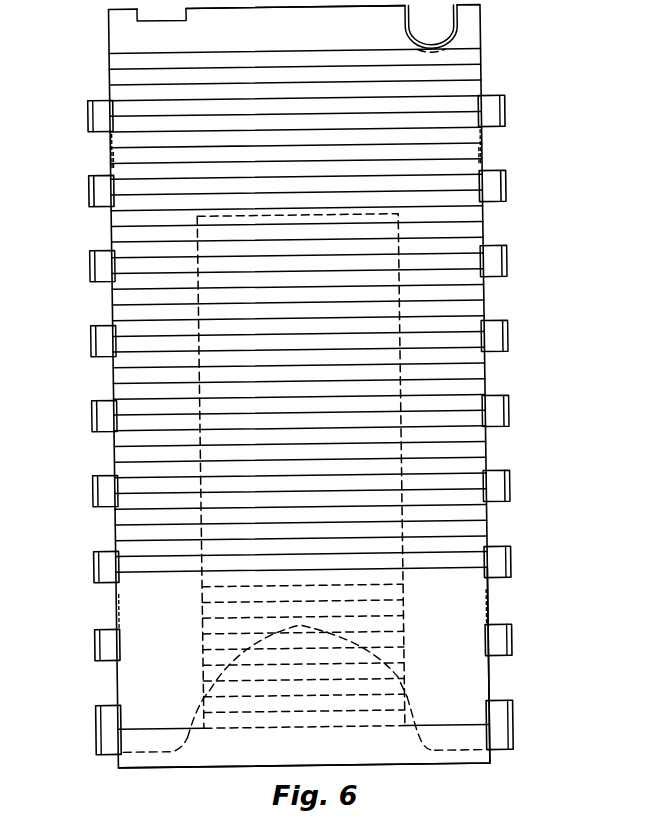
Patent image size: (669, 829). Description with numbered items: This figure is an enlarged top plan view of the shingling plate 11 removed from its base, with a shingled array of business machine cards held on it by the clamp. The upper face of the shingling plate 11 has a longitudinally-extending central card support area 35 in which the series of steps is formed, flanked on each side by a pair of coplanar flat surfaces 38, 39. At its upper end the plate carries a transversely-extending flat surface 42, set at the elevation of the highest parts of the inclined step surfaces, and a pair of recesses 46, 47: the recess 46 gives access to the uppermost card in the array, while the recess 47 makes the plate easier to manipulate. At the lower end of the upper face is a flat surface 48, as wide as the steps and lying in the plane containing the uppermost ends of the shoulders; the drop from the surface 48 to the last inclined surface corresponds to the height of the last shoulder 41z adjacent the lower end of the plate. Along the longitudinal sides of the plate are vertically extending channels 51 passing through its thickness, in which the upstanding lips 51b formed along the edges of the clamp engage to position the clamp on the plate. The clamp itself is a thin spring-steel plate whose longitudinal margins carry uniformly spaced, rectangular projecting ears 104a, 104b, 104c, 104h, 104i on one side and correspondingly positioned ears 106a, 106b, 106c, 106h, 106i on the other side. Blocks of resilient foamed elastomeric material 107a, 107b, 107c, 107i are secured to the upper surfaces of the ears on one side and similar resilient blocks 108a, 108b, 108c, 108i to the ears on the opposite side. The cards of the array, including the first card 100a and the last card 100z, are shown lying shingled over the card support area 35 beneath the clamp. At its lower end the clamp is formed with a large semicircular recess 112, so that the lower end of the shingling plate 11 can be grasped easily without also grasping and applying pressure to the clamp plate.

The shingling plate 11 is at (109, 48).
The card support area 35 is at (392, 247).
The flat surface 38 is at (463, 758).
The flat surface 39 is at (155, 758).
The last shoulder 41z is at (380, 727).
The transversely-extending flat surface 42 is at (329, 39).
The recess 46 is at (440, 28).
The recess 47 is at (157, 17).
The flat surface 48 is at (365, 757).
The vertically extending channel 51 is at (110, 140).
The upstanding lip 51b is at (110, 158).
The top layer 100a is at (472, 58).
The bottom layer 100z is at (477, 678).
The projecting ear 104i is at (508, 110).
The projecting ear 104h is at (508, 185).
The projecting ear 104c is at (513, 553).
The projecting ear 104b is at (515, 637).
The projecting ear 104a is at (515, 728).
The projecting ear 106i is at (92, 120).
The projecting ear 106h is at (92, 193).
The projecting ear 106c is at (97, 564).
The projecting ear 106b is at (95, 640).
The projecting ear 106a is at (97, 735).
The resilient block 107i is at (487, 102).
The resilient block 107c is at (490, 553).
The resilient block 107b is at (495, 632).
The resilient block 107a is at (495, 722).
The resilient block 108i is at (108, 105).
The resilient block 108c is at (108, 562).
The resilient block 108b is at (112, 630).
The resilient block 108a is at (108, 717).
The semicircular recess 112 is at (395, 640).